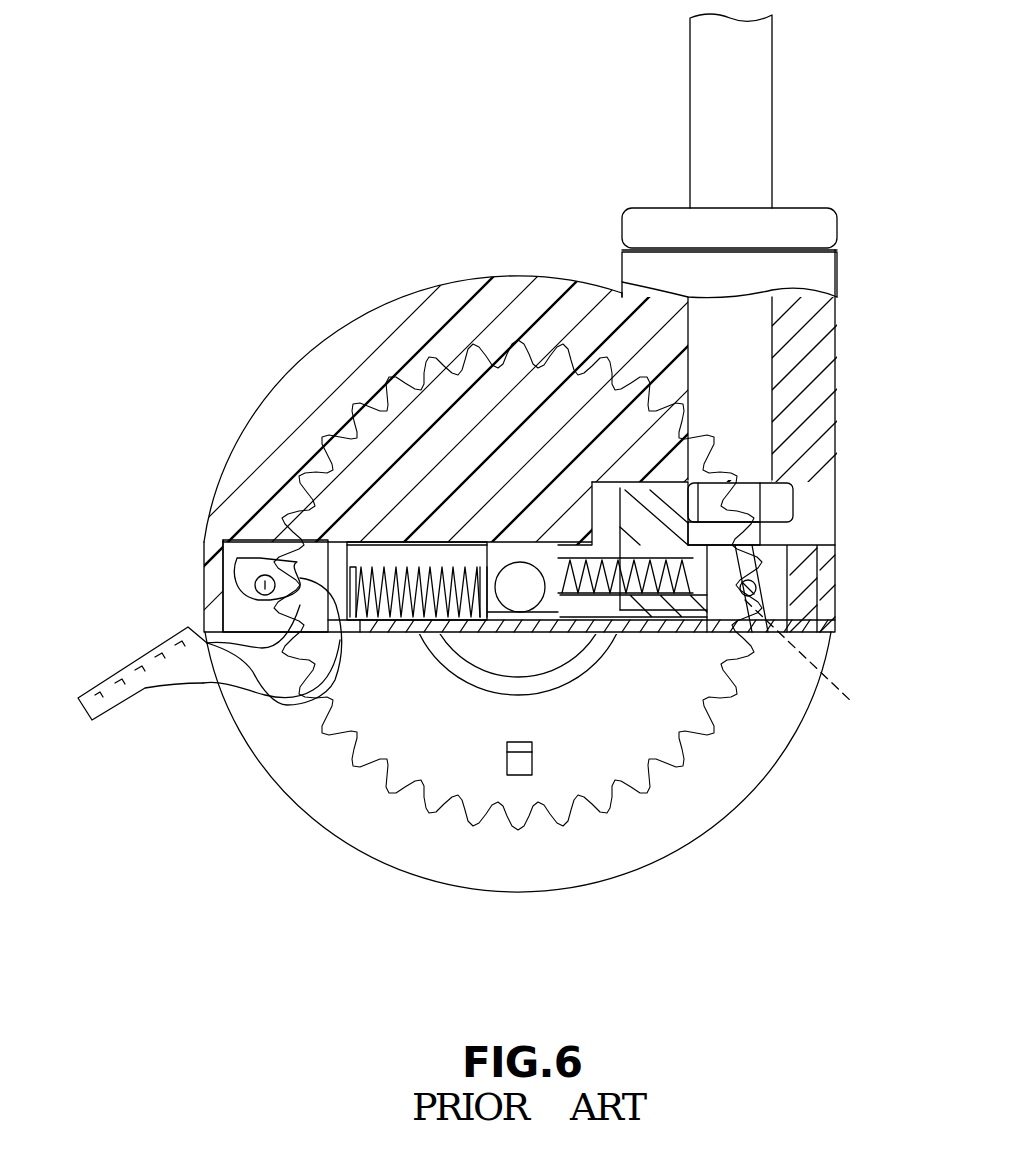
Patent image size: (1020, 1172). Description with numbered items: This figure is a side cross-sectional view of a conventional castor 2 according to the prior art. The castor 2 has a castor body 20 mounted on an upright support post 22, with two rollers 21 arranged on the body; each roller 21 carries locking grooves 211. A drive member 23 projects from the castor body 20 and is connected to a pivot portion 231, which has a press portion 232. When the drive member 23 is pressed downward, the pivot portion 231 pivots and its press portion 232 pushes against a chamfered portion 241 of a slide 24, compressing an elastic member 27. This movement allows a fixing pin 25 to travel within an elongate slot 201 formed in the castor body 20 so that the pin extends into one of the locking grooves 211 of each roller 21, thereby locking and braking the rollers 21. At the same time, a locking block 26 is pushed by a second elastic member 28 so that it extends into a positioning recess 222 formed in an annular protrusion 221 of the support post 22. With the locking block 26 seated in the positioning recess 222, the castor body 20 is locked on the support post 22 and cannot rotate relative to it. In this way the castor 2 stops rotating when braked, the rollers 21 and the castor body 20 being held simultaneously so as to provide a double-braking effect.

The castor 2 is at (404, 934).
The castor body 20 is at (447, 323).
The elongate slot 201 is at (824, 664).
The roller 21 is at (727, 780).
The locking groove 211 is at (757, 675).
The upright support post 22 is at (780, 97).
The annular protrusion 221 is at (777, 500).
The positioning recess 222 is at (735, 510).
The drive member 23 is at (133, 673).
The pivot portion 231 is at (255, 605).
The press portion 232 is at (313, 597).
The slide 24 is at (365, 627).
The chamfered portion 241 is at (340, 623).
The fixing pin 25 is at (700, 587).
The locking block 26 is at (640, 500).
The elastic member 27 is at (363, 573).
The second elastic member 28 is at (655, 592).